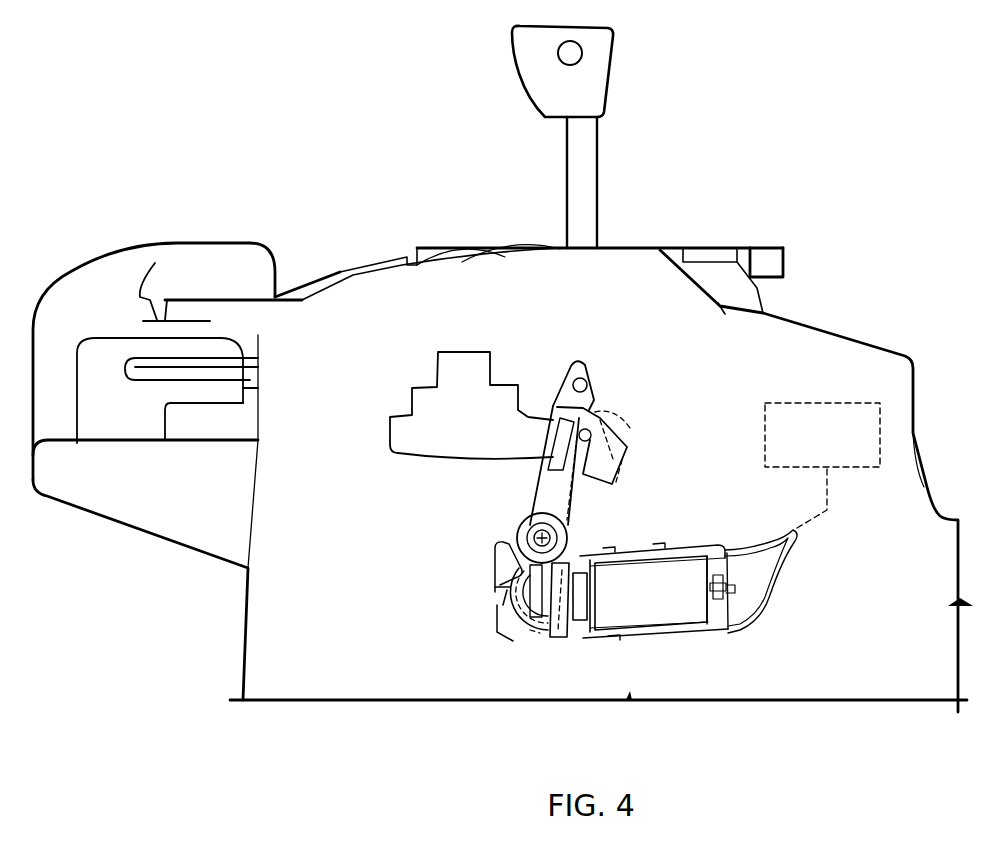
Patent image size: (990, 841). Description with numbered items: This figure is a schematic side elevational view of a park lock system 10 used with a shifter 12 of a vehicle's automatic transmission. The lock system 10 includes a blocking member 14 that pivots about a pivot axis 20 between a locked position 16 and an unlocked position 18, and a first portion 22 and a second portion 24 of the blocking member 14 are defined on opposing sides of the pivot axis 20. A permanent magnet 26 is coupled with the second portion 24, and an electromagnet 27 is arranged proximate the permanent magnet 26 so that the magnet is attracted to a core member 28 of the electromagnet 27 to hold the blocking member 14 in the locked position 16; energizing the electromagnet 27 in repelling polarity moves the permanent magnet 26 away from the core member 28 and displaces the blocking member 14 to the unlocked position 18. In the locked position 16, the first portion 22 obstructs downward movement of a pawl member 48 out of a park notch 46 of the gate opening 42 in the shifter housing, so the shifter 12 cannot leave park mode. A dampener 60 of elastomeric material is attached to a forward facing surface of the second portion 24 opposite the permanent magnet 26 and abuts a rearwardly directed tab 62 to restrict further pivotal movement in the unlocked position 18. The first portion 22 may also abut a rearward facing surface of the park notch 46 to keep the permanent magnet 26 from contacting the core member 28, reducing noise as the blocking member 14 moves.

The park lock system 10 is at (490, 322).
The shifter 12 is at (612, 226).
The blocking member 14 is at (528, 488).
The locked position 16 is at (592, 409).
The unlocked position 18 is at (628, 428).
The pivot axis 20 is at (560, 533).
The first portion 22 is at (557, 431).
The second portion 24 is at (567, 563).
The permanent magnet 26 is at (571, 637).
The electromagnet 27 is at (665, 610).
The core member 28 is at (587, 600).
The gate opening 42 is at (421, 428).
The park notch 46 is at (568, 373).
The pawl member 48 is at (585, 380).
The dampener 60 is at (525, 597).
The tab 62 is at (508, 582).